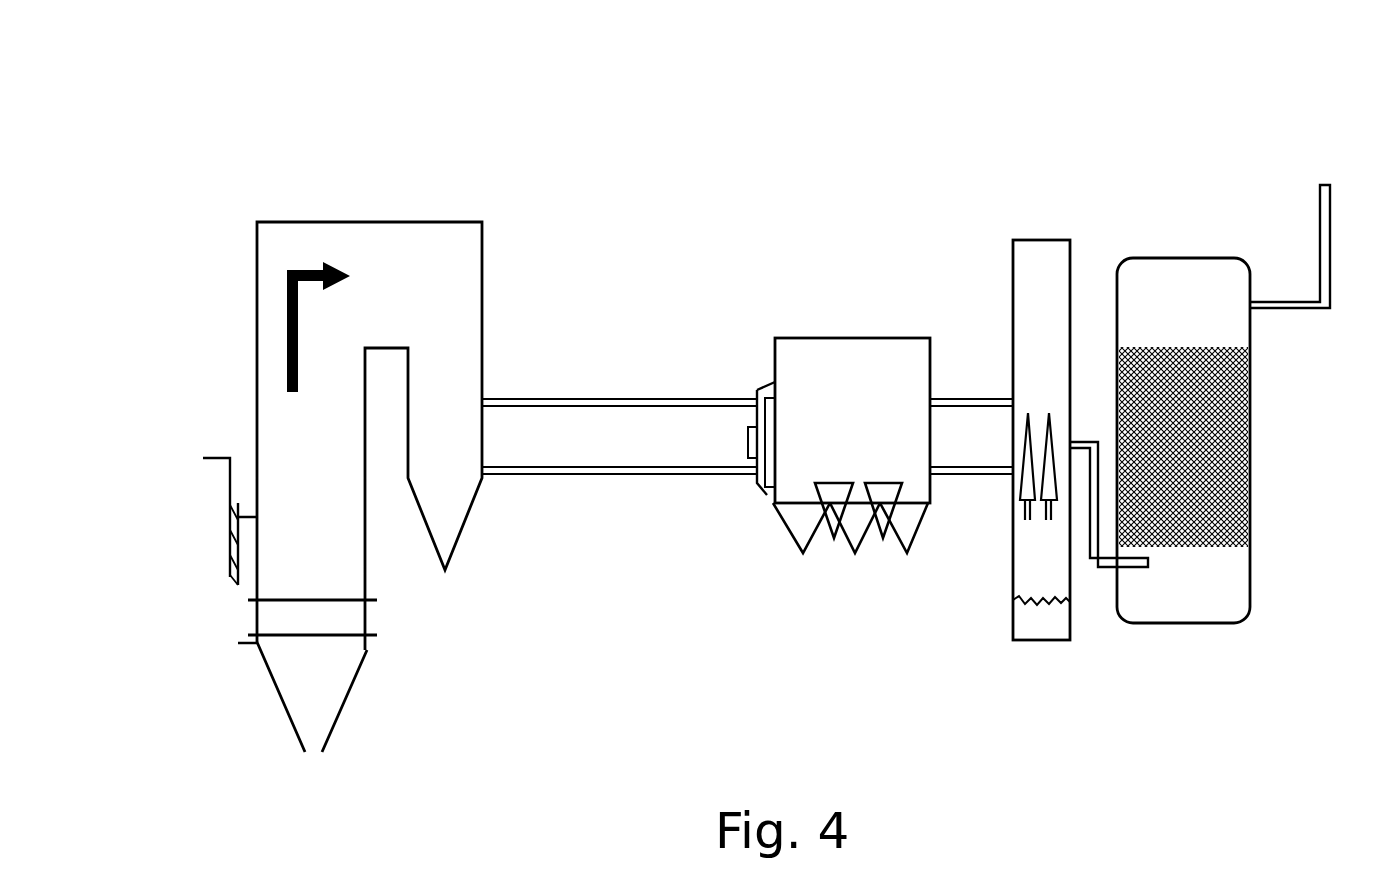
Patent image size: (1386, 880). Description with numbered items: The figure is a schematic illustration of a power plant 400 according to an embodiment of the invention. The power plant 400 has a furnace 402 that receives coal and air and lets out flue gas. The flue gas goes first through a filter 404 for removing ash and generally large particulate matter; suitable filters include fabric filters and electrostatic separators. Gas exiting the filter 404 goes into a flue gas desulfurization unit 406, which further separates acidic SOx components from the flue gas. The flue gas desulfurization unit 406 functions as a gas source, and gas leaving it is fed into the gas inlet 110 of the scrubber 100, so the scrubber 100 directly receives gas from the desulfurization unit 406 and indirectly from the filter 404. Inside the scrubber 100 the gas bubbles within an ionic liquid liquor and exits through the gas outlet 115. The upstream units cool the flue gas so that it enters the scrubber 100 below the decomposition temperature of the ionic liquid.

The power plant 400 is at (733, 174).
The furnace 402 is at (270, 359).
The filter 404 is at (782, 518).
The flue gas desulfurization unit 406 is at (1037, 620).
The gas inlet 110 is at (1108, 572).
The scrubber 100 is at (1237, 607).
The gas outlet 115 is at (1315, 308).